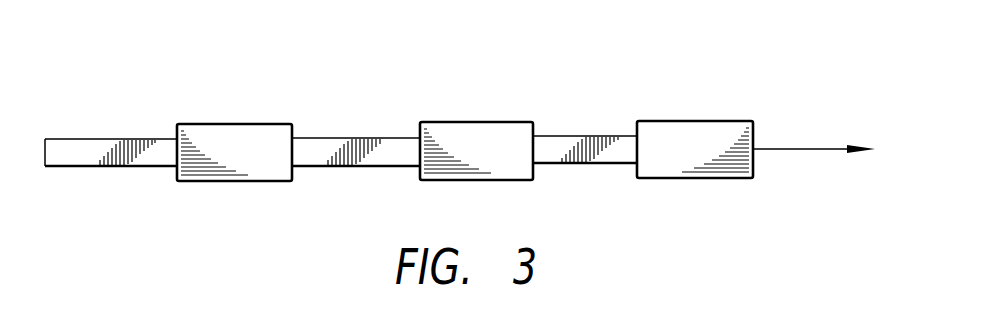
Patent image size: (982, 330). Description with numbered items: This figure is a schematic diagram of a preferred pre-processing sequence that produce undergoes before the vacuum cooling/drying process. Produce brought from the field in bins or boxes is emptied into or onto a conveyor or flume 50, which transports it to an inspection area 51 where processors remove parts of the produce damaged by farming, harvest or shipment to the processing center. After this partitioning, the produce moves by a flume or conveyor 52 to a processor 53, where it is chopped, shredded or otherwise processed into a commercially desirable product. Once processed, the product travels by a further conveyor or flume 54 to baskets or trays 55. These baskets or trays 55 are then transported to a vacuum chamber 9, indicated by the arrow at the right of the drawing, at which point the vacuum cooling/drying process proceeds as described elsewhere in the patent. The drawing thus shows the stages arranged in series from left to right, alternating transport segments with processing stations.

The vacuum chamber 9 is at (814, 136).
The conveyor or flume 50 is at (83, 138).
The inspection area 51 is at (232, 123).
The flume or conveyor 52 is at (358, 138).
The processor 53 is at (475, 122).
The conveyor or flume 54 is at (578, 136).
The baskets or trays 55 is at (698, 121).